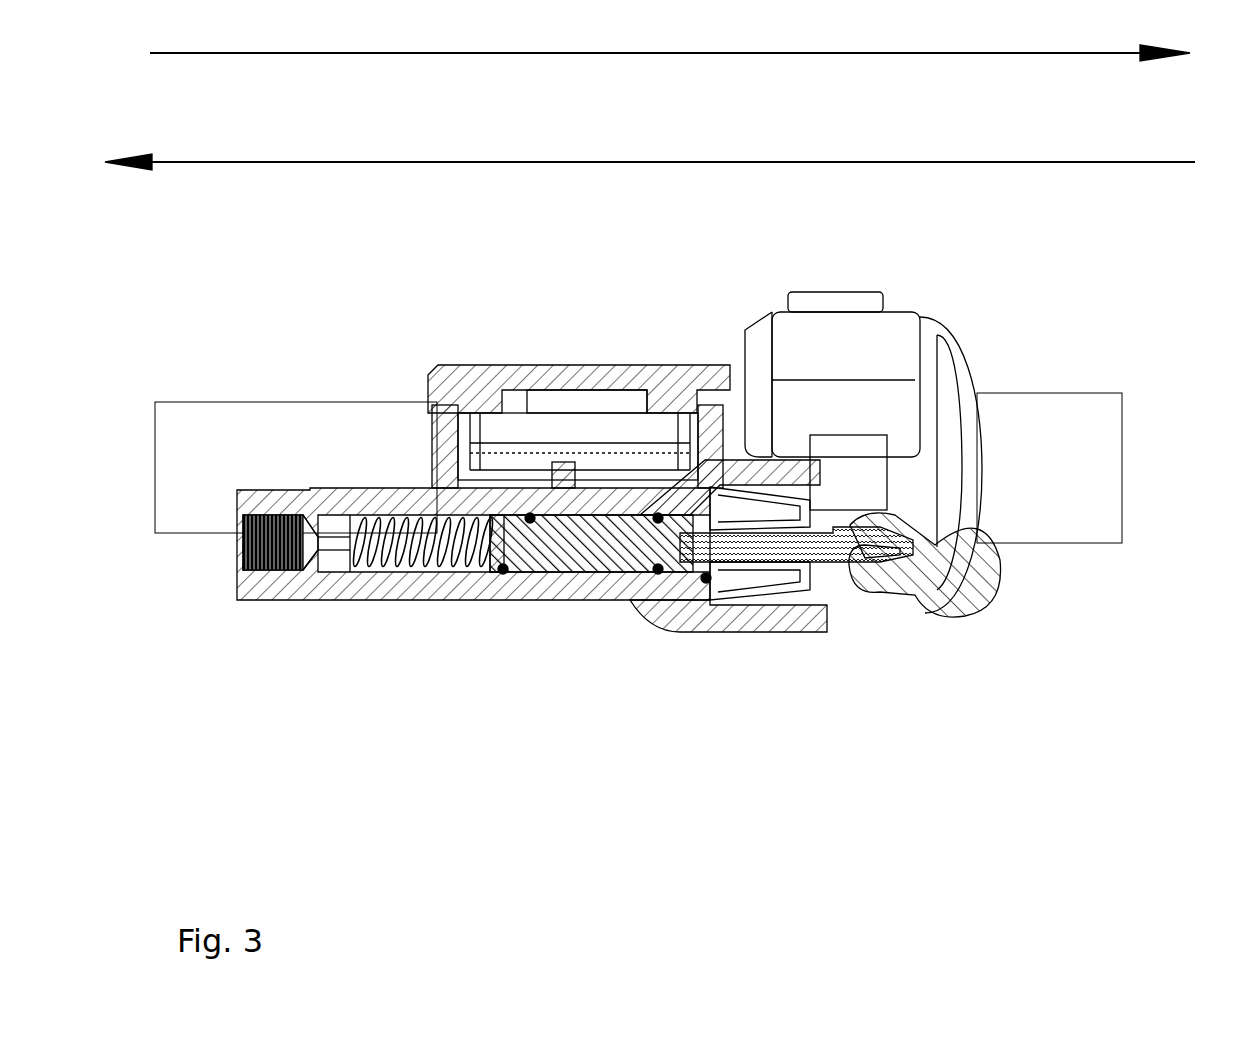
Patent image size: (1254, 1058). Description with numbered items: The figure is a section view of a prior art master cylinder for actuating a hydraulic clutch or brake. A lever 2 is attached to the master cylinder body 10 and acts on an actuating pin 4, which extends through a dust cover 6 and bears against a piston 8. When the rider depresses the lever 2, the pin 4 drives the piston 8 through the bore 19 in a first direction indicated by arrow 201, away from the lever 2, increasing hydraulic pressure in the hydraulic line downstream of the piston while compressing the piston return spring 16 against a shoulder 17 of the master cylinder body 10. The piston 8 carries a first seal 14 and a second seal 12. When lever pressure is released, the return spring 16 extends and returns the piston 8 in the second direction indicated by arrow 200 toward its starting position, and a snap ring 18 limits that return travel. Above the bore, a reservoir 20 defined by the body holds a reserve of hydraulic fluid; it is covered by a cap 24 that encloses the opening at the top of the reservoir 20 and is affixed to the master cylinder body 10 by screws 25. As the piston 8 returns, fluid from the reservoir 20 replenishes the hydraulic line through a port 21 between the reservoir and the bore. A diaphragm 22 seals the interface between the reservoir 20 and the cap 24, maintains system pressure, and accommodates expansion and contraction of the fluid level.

The lever 2 is at (970, 587).
The actuating pin 4 is at (823, 570).
The dust cover 6 is at (773, 580).
The piston 8 is at (587, 565).
The master cylinder body 10 is at (715, 617).
The second seal 12 is at (660, 565).
The first seal 14 is at (523, 565).
The piston return spring 16 is at (397, 565).
The shoulder 17 is at (350, 565).
The snap ring 18 is at (710, 575).
The bore 19 is at (430, 565).
The reservoir 20 is at (535, 470).
The port 21 is at (530, 515).
The diaphragm 22 is at (645, 445).
The cap 24 is at (548, 365).
The screws 25 is at (492, 510).
The arrow 200 is at (645, 54).
The arrow 201 is at (672, 162).